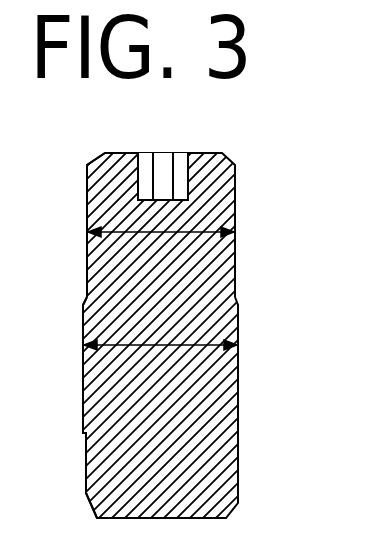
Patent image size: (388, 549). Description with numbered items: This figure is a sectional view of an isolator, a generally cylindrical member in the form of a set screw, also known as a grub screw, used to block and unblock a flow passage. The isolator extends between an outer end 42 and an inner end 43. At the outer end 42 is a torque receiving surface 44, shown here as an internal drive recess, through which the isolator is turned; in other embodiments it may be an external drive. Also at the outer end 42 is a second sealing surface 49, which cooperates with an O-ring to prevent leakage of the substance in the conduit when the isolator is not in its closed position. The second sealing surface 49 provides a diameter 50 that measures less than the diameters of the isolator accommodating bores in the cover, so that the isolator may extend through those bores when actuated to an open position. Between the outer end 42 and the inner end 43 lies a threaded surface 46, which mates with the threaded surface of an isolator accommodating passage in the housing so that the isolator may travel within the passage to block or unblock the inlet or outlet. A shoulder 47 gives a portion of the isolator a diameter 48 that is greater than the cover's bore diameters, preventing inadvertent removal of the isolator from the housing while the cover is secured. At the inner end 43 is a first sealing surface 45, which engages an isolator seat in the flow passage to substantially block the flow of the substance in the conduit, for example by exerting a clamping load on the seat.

The outer end 42 is at (265, 170).
The inner end 43 is at (265, 497).
The torque receiving surface 44 is at (165, 168).
The first sealing surface 45 is at (92, 507).
The threaded surface 46 is at (85, 386).
The shoulder 47 is at (87, 298).
The diameter 48 is at (190, 348).
The second sealing surface 49 is at (87, 195).
The diameter 50 is at (190, 234).